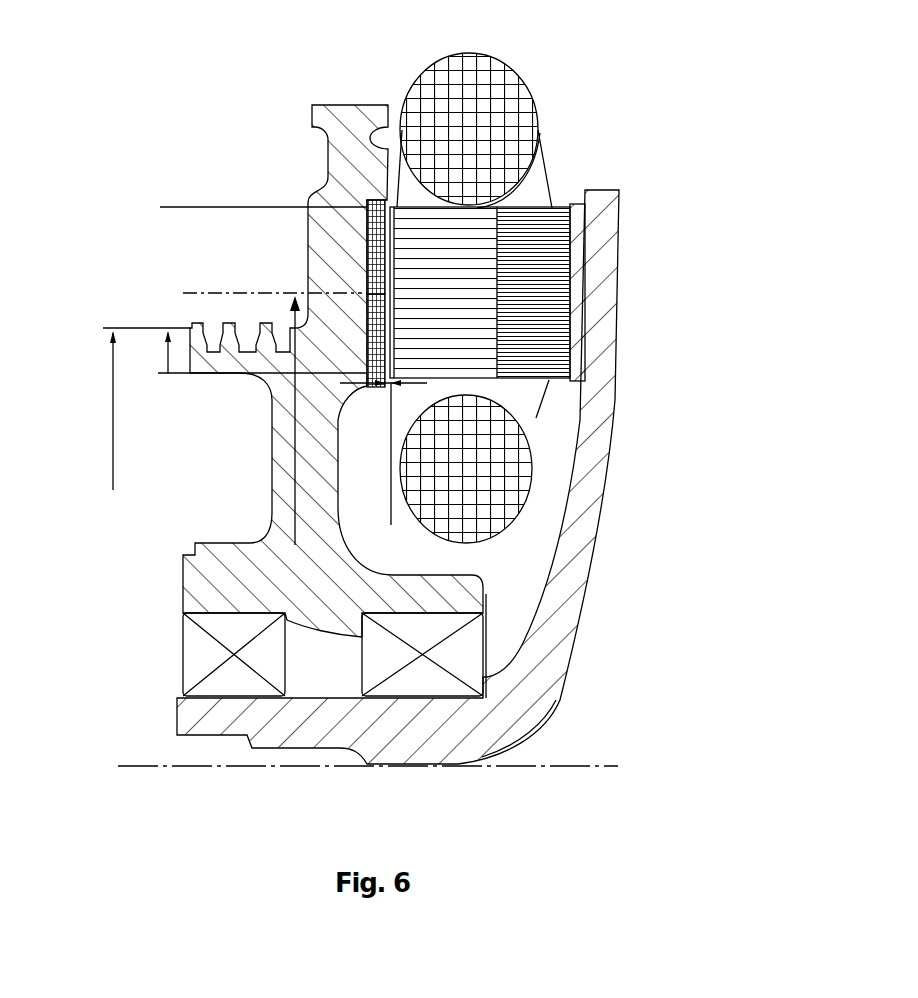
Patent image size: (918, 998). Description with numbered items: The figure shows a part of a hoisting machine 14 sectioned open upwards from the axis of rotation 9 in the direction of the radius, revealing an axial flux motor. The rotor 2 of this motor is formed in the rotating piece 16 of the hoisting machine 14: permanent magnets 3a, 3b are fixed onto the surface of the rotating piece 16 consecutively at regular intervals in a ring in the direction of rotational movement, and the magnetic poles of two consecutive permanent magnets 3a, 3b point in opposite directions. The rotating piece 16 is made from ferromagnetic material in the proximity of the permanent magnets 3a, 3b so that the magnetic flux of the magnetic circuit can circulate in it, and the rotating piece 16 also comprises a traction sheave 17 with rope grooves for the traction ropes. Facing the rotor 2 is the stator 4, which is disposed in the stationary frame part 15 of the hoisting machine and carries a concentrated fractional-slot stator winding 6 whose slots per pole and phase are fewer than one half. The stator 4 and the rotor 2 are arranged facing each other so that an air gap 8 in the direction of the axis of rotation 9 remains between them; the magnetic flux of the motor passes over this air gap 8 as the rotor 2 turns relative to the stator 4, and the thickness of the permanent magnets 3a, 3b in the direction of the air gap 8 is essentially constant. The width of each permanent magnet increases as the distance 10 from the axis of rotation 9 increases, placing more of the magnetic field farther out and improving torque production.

The rotor 2 is at (355, 260).
The permanent magnet 3a is at (369, 228).
The permanent magnet 3b is at (376, 340).
The stator 4 is at (487, 207).
The stator winding 6 is at (525, 80).
The air gap 8 is at (382, 392).
The axis of rotation 9 is at (487, 767).
The distance from the axis of rotation 10 is at (112, 400).
The hoisting machine 14 is at (682, 118).
The stationary frame part 15 is at (352, 105).
The rotating piece 16 is at (183, 572).
The traction sheave 17 is at (220, 333).